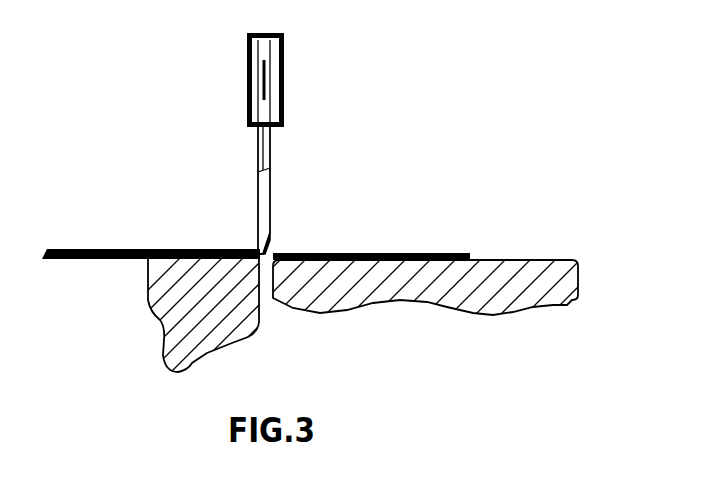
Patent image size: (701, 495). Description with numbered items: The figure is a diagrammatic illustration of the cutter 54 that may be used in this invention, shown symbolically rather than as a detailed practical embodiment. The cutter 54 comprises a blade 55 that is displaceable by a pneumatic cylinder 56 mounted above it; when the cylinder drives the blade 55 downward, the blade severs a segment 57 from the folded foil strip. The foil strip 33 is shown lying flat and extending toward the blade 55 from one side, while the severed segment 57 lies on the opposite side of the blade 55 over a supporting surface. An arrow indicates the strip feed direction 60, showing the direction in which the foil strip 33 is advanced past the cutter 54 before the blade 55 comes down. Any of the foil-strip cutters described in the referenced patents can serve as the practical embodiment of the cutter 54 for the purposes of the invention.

The film strip 33 is at (84, 249).
The cutter 54 is at (304, 196).
The blade 55 is at (258, 193).
The pneumatic cylinder 56 is at (280, 84).
The segment 57 is at (437, 253).
The strip feed direction 60 is at (303, 237).